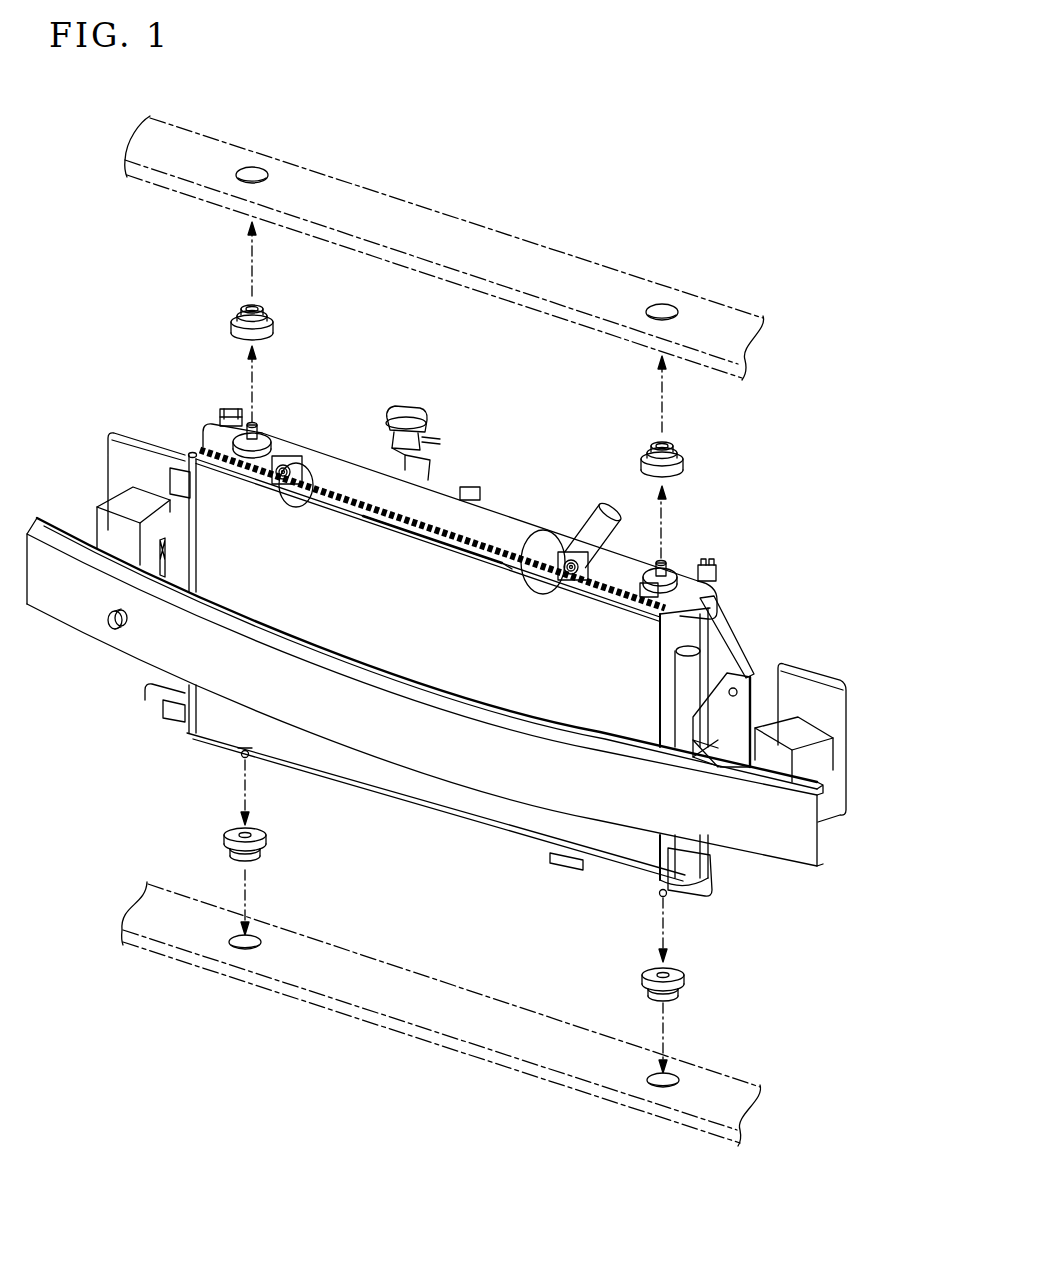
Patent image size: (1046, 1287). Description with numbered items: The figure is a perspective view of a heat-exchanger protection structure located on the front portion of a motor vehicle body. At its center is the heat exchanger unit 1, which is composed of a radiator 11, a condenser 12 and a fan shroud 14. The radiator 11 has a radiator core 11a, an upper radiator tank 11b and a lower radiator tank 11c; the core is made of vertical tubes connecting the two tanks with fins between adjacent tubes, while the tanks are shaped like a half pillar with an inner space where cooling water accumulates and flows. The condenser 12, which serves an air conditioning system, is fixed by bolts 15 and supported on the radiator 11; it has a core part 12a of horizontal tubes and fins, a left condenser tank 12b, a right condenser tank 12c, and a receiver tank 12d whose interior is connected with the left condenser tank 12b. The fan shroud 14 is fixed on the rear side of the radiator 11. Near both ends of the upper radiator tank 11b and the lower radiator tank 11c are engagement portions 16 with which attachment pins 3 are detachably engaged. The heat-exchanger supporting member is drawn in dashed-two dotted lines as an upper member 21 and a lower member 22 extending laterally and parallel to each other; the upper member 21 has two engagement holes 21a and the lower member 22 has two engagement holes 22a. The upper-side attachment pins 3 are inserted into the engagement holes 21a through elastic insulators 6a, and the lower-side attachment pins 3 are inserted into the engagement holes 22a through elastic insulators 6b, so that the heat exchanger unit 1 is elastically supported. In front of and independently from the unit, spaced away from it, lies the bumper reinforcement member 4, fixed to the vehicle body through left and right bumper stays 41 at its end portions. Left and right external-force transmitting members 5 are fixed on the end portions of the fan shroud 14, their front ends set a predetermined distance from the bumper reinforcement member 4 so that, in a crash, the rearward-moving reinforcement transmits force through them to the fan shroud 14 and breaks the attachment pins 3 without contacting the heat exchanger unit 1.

The heat exchanger unit 1 is at (489, 474).
The attachment pin 3 is at (258, 430).
The bumper reinforcement member 4 is at (150, 648).
The external-force transmitting member 5 is at (135, 525).
The insulator 6a is at (232, 320).
The insulator 6b is at (224, 844).
The radiator 11 is at (330, 462).
The radiator core 11a is at (695, 622).
The upper radiator tank 11b is at (597, 562).
The lower radiator tank 11c is at (468, 830).
The condenser 12 is at (523, 838).
The core part 12a is at (433, 668).
The left condenser tank 12b is at (658, 868).
The right condenser tank 12c is at (180, 466).
The receiver tank 12d is at (700, 690).
The fan shroud 14 is at (715, 648).
The bolt 15 is at (290, 462).
The engagement portion 16 is at (256, 470).
The upper member 21 is at (428, 216).
The engagement hole 21a is at (254, 170).
The lower member 22 is at (400, 1012).
The engagement hole 22a is at (240, 938).
The bumper stay 41 is at (98, 508).